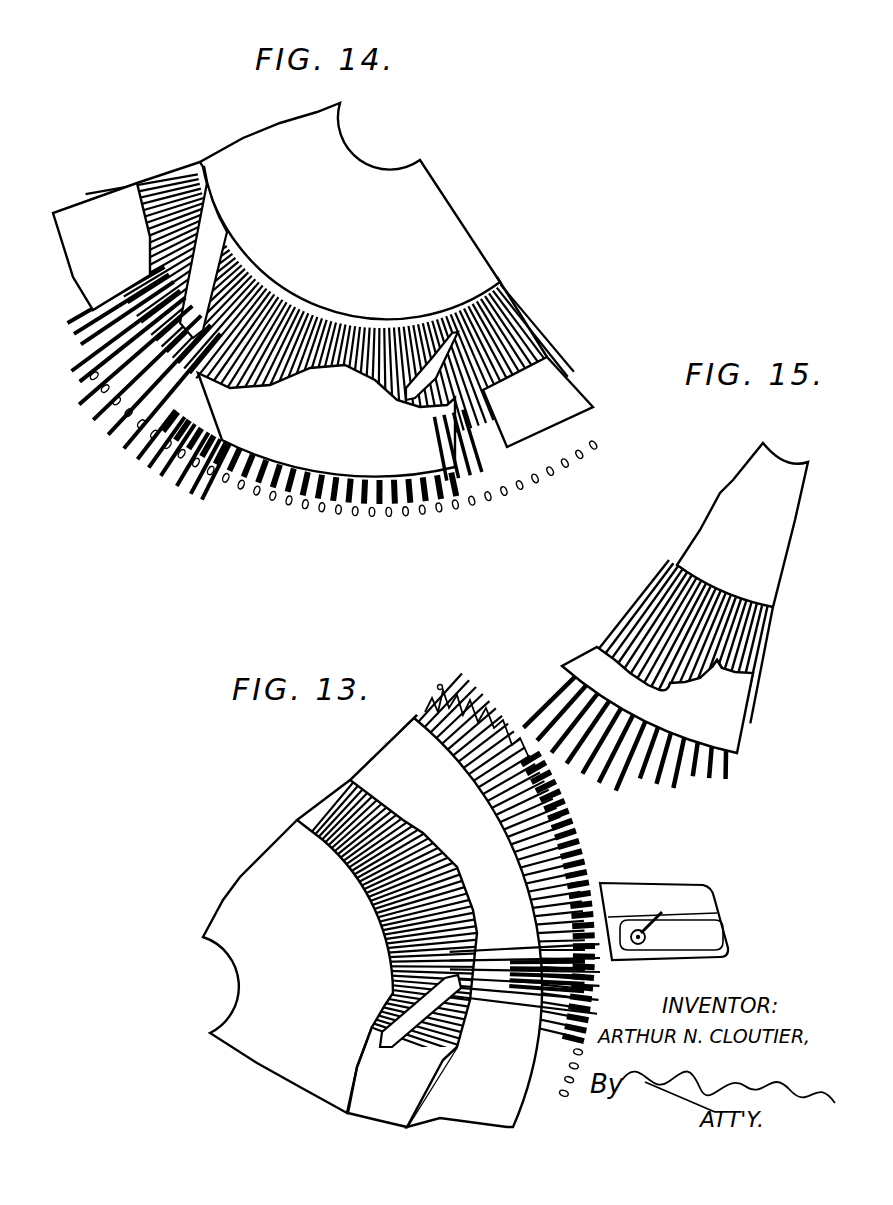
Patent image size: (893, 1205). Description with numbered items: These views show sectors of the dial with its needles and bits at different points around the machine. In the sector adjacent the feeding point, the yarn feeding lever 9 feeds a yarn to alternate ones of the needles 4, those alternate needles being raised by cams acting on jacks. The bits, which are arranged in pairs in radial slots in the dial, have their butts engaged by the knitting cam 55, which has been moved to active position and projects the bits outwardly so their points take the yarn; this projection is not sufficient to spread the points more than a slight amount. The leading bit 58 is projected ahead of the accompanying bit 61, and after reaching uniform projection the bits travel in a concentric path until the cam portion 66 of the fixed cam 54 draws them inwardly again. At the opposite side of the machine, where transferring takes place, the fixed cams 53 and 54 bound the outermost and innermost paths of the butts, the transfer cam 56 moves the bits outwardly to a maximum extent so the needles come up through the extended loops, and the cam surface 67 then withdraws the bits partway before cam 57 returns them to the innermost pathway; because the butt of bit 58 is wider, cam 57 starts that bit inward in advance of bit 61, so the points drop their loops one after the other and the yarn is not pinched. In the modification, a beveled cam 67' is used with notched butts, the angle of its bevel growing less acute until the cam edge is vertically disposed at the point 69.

In FIG. 14, the needles 4 is at (592, 448).
In FIG. 13, the needles 4 is at (572, 1080).
In FIG. 13, the yarn feeding lever 9 is at (697, 923).
In FIG. 14, the cam 53 is at (350, 211).
In FIG. 15, the cam 53 is at (742, 525).
In FIG. 13, the cam 53 is at (310, 914).
In FIG. 14, the cam 54 is at (310, 434).
In FIG. 13, the cam 54 is at (446, 921).
In FIG. 13, the knitting cam 55 is at (397, 1023).
In FIG. 14, the transfer cam 56 is at (210, 225).
In FIG. 14, the cam 57 is at (455, 347).
In FIG. 14, the bit 58 is at (108, 437).
In FIG. 13, the bit 58 is at (547, 808).
In FIG. 14, the bit 61 is at (96, 430).
In FIG. 13, the bit 61 is at (553, 812).
In FIG. 13, the cam portion 66 is at (410, 810).
In FIG. 14, the cam surface 67 is at (330, 308).
In FIG. 15, the cam 67' is at (648, 675).
In FIG. 15, the point 69 is at (720, 663).